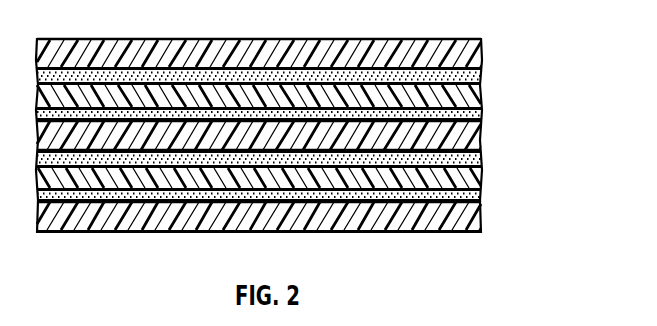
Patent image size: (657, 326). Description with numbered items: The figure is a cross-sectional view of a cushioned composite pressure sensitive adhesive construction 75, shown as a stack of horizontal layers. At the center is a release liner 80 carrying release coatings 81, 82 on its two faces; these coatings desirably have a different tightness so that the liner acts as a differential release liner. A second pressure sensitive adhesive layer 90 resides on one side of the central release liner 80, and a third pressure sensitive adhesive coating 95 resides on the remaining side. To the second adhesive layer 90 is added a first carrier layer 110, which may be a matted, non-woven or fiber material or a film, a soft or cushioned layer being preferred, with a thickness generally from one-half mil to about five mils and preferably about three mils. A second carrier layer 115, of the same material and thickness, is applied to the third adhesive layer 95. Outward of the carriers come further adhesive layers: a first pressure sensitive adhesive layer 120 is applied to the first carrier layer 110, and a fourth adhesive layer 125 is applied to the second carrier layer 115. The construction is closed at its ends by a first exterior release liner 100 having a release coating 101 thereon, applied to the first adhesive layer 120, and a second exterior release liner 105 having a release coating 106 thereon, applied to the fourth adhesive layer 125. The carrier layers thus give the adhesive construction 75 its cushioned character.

The cushioned composite construction 75 is at (488, 35).
The first exterior release liner 100 is at (483, 52).
The release coating 101 is at (483, 70).
The first pressure sensitive adhesive layer 120 is at (483, 78).
The first carrier layer 110 is at (483, 95).
The second pressure sensitive adhesive layer 90 is at (483, 114).
The release coating 81 is at (483, 123).
The central release liner 80 is at (483, 138).
The release coating 82 is at (483, 150).
The third pressure sensitive adhesive coating 95 is at (483, 160).
The second carrier layer 115 is at (483, 172).
The fourth adhesive layer 125 is at (483, 186).
The release coating 106 is at (483, 207).
The second exterior release liner 105 is at (483, 228).